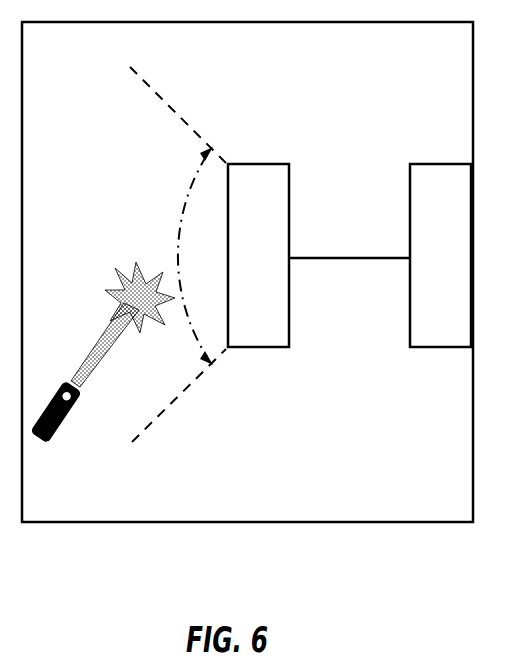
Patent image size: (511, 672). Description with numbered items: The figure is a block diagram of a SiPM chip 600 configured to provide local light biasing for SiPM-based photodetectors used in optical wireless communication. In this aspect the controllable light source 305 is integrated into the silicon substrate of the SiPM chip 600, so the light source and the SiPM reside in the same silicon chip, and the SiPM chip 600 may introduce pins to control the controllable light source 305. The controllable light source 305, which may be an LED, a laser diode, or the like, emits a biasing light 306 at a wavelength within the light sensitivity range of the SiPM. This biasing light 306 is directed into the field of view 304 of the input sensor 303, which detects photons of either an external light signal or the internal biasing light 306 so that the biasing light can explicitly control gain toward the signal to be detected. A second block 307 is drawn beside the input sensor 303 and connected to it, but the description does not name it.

The input sensor 303 is at (258, 164).
The field of view 304 is at (189, 201).
The controllable light source 305 is at (55, 428).
The biasing light 306 is at (88, 363).
The readout electronics block 307 is at (442, 164).
The SiPM chip 600 is at (388, 496).